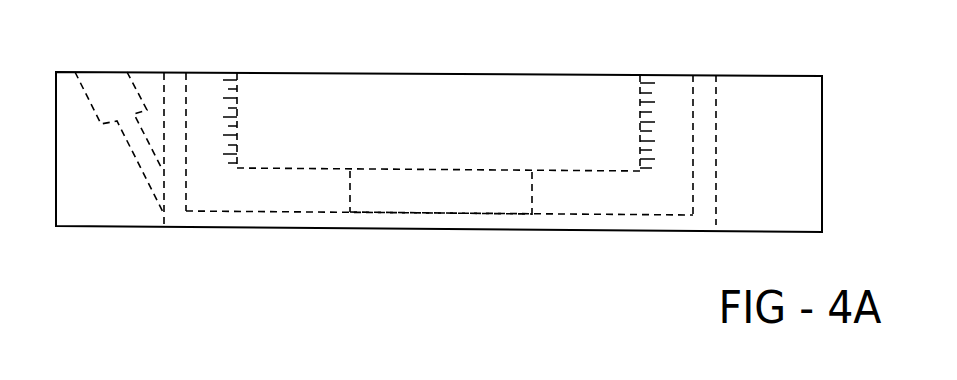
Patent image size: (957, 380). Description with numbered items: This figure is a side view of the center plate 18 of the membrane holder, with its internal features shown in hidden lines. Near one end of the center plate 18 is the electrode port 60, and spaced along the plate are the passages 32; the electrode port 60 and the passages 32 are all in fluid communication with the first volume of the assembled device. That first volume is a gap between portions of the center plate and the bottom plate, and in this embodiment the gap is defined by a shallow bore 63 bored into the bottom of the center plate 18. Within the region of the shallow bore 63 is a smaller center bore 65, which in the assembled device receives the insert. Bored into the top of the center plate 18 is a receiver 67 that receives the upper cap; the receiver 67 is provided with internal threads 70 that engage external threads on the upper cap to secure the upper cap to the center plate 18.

The center plate 18 is at (87, 227).
The passages 32 is at (174, 84).
The electrode port 60 is at (108, 80).
The shallow bore 63 is at (250, 220).
The center bore 65 is at (443, 197).
The receiver 67 is at (500, 103).
The internal threads 70 is at (237, 119).